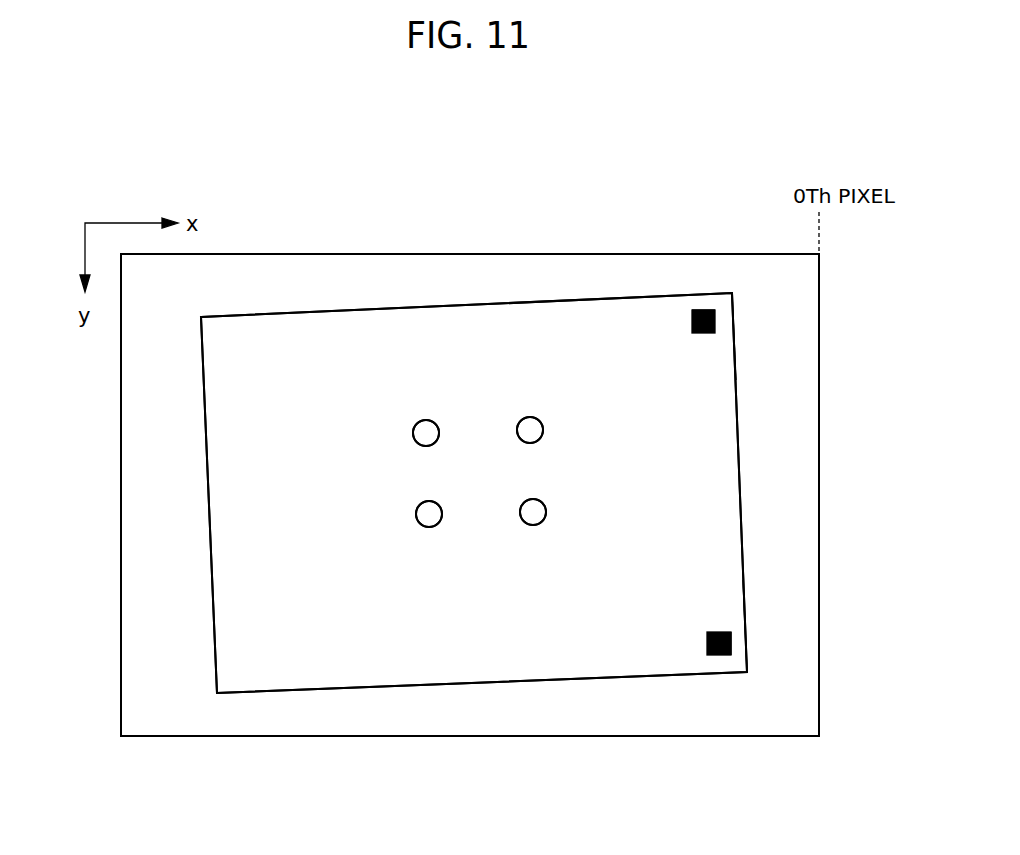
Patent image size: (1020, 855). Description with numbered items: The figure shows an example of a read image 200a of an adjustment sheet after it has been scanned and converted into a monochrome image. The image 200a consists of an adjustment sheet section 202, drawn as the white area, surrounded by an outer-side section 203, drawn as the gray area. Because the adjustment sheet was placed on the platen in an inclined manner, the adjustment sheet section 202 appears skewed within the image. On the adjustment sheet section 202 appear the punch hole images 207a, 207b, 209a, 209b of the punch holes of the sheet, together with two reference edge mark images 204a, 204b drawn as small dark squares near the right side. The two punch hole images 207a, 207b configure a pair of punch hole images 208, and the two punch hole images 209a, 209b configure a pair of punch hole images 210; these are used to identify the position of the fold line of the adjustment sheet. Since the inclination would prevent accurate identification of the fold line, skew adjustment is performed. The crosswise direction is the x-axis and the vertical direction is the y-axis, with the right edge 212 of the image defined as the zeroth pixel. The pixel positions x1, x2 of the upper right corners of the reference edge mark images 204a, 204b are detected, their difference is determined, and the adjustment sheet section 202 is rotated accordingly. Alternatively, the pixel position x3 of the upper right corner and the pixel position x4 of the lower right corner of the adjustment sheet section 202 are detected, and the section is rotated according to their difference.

The read image of the adjustment sheet 200a is at (288, 254).
The adjustment sheet section 202 is at (358, 690).
The outer-side section 203 is at (168, 638).
The reference edge mark image 204a is at (692, 312).
The reference edge mark image 204b is at (710, 655).
The punch hole image 207a is at (413, 436).
The punch hole image 207b is at (546, 430).
The pair of punch hole images 208 is at (487, 418).
The punch hole image 209a is at (416, 515).
The punch hole image 209b is at (549, 513).
The pair of punch hole images 210 is at (476, 544).
The right edge of the image 212 is at (822, 578).
The pixel position x1 is at (711, 310).
The pixel position x2 is at (732, 637).
The pixel position x3 is at (732, 293).
The pixel position x4 is at (747, 672).